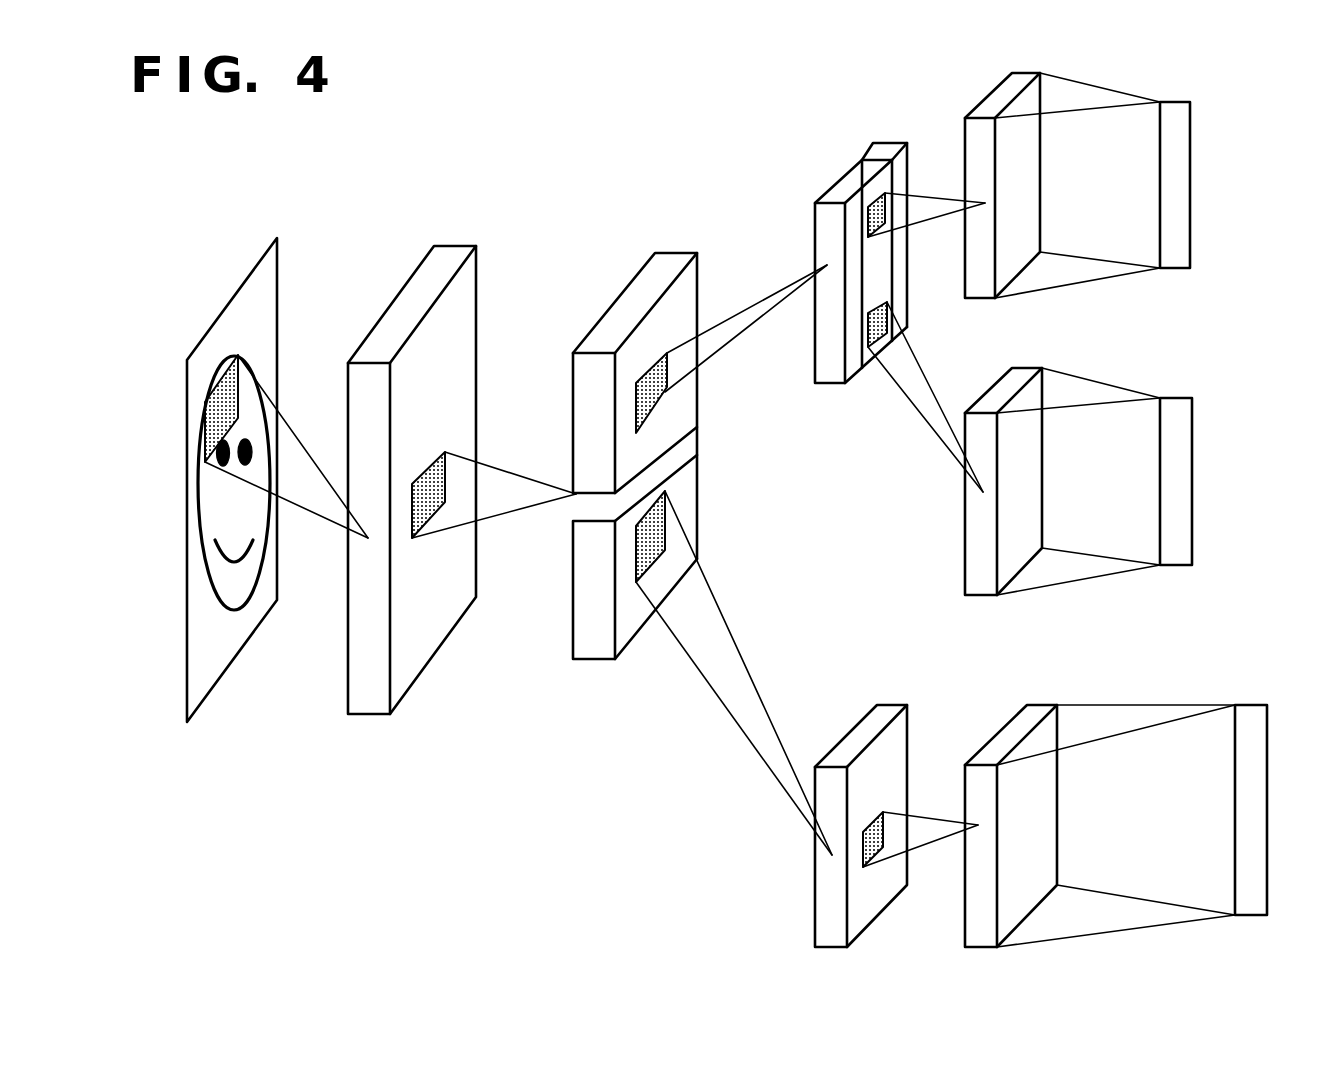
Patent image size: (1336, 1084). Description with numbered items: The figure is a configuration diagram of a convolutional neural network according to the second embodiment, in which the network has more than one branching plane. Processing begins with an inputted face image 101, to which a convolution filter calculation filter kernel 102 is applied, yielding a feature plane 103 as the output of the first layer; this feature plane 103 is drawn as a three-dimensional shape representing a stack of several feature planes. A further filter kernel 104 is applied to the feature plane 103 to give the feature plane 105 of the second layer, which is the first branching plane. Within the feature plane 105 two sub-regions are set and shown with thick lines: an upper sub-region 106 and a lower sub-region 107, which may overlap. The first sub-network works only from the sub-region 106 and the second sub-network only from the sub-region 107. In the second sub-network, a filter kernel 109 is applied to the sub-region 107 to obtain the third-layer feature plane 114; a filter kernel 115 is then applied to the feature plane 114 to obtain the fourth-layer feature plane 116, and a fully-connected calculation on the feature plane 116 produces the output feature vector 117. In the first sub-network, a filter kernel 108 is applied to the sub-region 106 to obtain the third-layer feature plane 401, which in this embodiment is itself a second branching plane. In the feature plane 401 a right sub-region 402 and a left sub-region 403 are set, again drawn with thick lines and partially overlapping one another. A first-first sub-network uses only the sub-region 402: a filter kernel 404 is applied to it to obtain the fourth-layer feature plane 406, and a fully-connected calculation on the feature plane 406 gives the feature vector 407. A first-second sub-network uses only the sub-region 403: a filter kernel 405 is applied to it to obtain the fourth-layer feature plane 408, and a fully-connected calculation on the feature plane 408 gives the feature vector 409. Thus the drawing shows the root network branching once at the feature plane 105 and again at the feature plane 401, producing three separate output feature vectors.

The image 101 is at (238, 294).
The filter kernel 102 is at (204, 396).
The feature plane 103 is at (394, 296).
The filter kernel 104 is at (434, 460).
The feature plane 105 is at (588, 423).
The sub-region 106 is at (615, 304).
The sub-region 107 is at (572, 627).
The filter kernel 108 is at (669, 372).
The filter kernel 109 is at (667, 520).
The feature plane 401 is at (819, 250).
The right sub-region 402 is at (890, 143).
The left sub-region 403 is at (815, 221).
The filter kernel 404 is at (878, 192).
The filter kernel 405 is at (878, 303).
The feature plane 406 is at (993, 114).
The feature vector 407 is at (1183, 102).
The feature plane 408 is at (990, 388).
The feature vector 409 is at (1177, 400).
The feature plane 114 is at (848, 733).
The filter kernel 115 is at (872, 817).
The feature plane 116 is at (1000, 731).
The feature vector 117 is at (1251, 705).